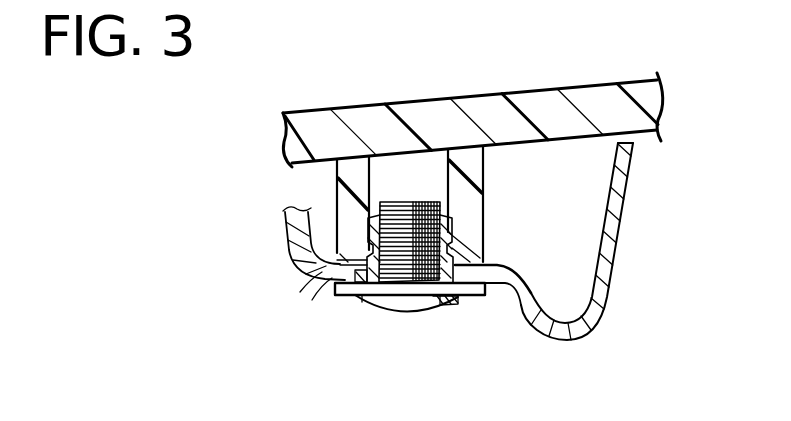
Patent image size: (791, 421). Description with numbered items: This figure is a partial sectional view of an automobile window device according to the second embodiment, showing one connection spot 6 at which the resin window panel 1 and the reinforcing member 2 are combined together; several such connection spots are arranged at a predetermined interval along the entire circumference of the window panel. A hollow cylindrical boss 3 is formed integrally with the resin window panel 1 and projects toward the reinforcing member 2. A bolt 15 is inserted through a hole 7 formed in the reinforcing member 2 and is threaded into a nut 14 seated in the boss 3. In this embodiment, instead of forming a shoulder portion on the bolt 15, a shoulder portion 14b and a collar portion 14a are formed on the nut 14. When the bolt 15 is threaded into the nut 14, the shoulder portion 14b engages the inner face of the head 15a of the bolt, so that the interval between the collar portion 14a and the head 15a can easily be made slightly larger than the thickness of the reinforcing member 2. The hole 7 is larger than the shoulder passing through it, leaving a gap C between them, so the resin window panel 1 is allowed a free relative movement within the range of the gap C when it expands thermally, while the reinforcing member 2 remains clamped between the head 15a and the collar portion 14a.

The resin window panel 1 is at (400, 102).
The reinforcing member 2 is at (623, 218).
The hollow cylindrical boss 3 is at (475, 174).
The connection spot 6 is at (393, 318).
The hole 7 is at (470, 298).
The nut 14 is at (452, 222).
The collar portion 14a is at (312, 281).
The shoulder portion 14b is at (372, 303).
The bolt 15 is at (411, 312).
The head 15a is at (455, 312).
The gap C is at (332, 290).